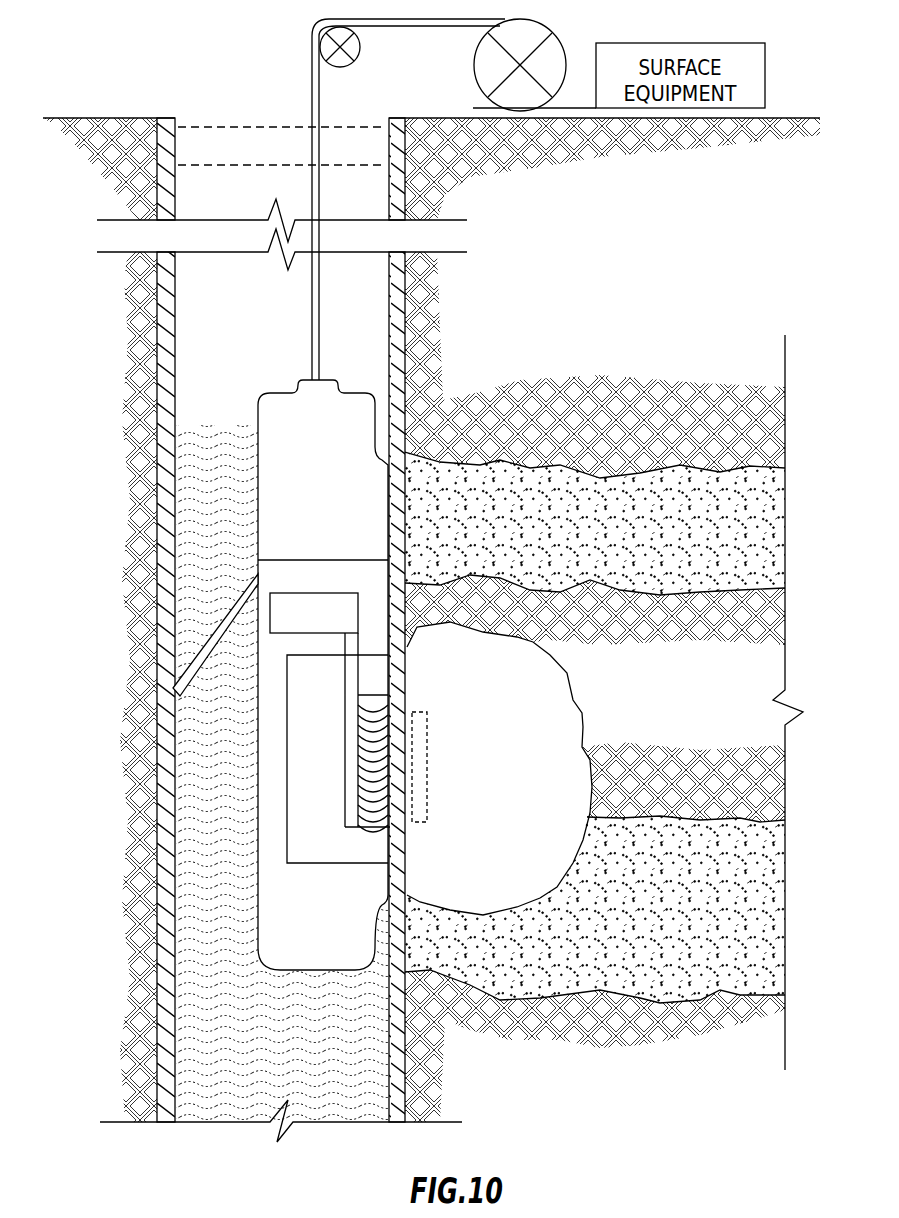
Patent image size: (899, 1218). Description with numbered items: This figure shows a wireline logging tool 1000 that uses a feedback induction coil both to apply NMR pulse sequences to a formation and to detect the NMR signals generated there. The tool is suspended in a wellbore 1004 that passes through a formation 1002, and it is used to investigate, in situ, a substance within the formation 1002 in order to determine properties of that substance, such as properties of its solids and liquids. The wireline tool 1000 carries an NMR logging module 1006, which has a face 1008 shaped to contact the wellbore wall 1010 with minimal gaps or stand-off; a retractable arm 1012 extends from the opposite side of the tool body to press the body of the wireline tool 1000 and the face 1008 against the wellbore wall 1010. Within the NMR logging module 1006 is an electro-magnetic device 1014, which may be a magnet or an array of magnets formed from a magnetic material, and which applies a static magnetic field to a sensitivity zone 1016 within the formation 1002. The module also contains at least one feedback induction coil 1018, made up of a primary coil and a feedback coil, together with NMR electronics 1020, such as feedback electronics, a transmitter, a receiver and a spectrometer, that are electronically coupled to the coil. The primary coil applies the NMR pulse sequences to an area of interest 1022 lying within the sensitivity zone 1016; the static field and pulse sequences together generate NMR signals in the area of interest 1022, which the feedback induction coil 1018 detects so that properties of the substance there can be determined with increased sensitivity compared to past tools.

The wireline logging tool 1000 is at (349, 493).
The formation 1002 is at (661, 536).
The wellbore 1004 is at (185, 351).
The NMR logging module 1006 is at (270, 818).
The face 1008 is at (405, 700).
The wellbore wall 1010 is at (388, 360).
The retractable arm 1012 is at (162, 692).
The electro-magnetic device 1014 is at (351, 860).
The sensitivity zone 1016 is at (578, 707).
The feedback induction coil 1018 is at (370, 830).
The NMR electronics 1020 is at (346, 630).
The area of interest 1022 is at (428, 758).